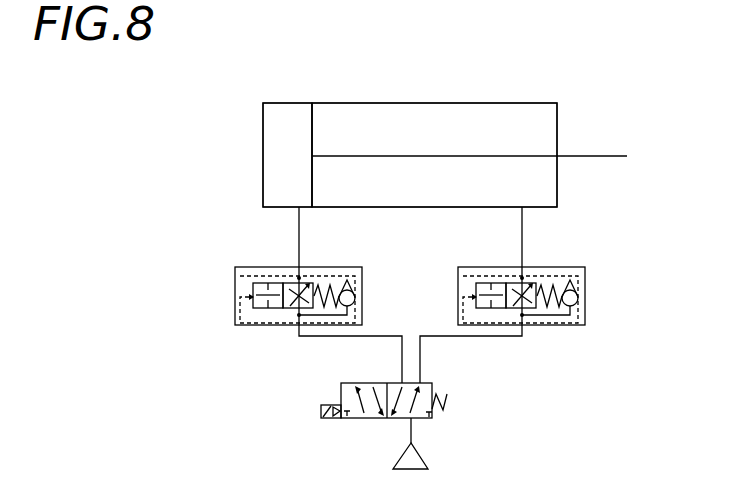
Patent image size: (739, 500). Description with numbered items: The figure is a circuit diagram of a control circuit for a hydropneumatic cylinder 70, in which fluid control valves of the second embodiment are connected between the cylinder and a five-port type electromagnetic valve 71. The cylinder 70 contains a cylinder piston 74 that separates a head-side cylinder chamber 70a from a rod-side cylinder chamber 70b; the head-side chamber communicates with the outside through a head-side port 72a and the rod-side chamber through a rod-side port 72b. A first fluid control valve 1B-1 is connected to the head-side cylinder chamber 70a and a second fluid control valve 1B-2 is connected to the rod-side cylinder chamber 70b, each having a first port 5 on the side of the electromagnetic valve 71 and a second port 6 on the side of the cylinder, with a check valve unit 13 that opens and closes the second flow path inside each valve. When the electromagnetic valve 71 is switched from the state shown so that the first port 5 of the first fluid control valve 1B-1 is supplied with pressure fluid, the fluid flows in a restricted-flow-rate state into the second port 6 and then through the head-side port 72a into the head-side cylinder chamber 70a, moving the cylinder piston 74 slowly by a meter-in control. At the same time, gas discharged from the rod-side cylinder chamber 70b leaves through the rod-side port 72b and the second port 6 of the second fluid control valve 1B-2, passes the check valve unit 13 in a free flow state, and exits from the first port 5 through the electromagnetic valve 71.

The hydropneumatic cylinder 70 is at (516, 103).
The head-side cylinder chamber 70a is at (283, 167).
The rod-side cylinder chamber 70b is at (412, 118).
The cylinder piston 74 is at (312, 122).
The head-side port 72a is at (300, 208).
The rod-side port 72b is at (523, 210).
The second port 6 is at (299, 278).
The first port 5 is at (298, 313).
The check valve unit 13 is at (355, 298).
The first fluid control valve 1B-1 is at (243, 315).
The second fluid control valve 1B-2 is at (573, 320).
The electromagnetic valve 71 is at (355, 417).